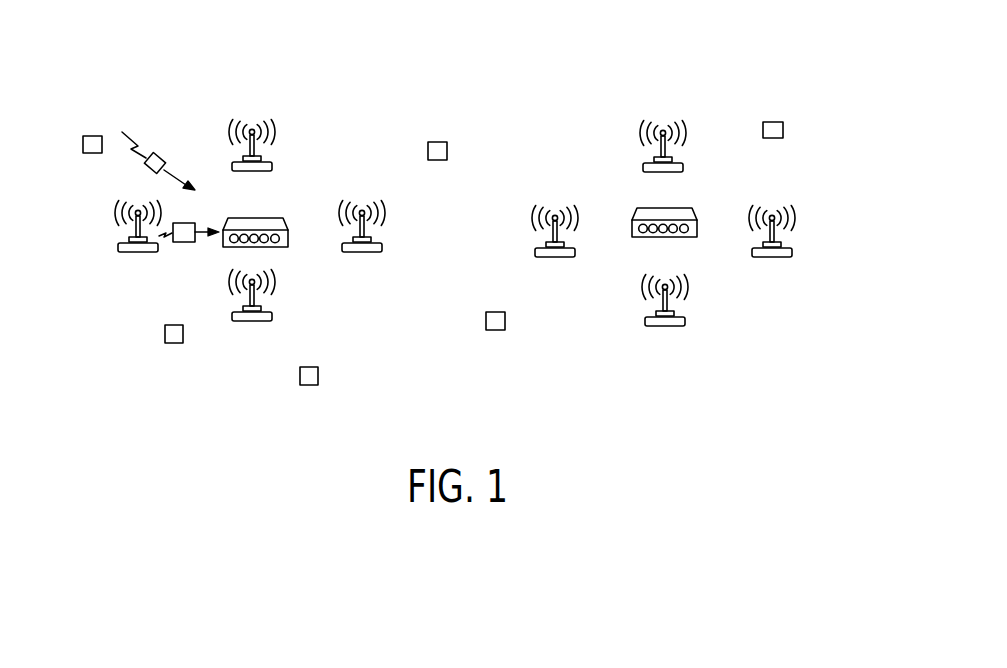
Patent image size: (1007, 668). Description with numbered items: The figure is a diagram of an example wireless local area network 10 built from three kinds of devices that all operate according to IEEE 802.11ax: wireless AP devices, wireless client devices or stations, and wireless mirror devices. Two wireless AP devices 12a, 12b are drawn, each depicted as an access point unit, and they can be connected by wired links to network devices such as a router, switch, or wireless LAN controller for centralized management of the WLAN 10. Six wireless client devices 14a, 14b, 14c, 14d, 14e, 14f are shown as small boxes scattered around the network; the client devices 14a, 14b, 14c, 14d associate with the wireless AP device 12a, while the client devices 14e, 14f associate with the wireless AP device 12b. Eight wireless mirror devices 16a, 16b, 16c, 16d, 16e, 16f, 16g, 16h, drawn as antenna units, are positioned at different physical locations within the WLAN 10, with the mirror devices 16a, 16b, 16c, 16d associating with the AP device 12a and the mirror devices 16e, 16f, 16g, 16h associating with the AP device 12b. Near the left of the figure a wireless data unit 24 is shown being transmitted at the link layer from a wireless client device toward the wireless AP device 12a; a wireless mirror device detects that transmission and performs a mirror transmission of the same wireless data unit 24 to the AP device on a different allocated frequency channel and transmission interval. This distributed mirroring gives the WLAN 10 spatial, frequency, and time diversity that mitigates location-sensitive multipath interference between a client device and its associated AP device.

The wireless local area network 10 is at (732, 82).
The wireless AP device 12a is at (258, 222).
The wireless AP device 12b is at (667, 213).
The wireless client device 14a is at (90, 136).
The wireless client device 14b is at (440, 161).
The wireless client device 14c is at (308, 386).
The wireless client device 14d is at (172, 344).
The wireless client device 14e is at (785, 128).
The wireless client device 14f is at (495, 331).
The wireless mirror device 16a is at (140, 252).
The wireless mirror device 16b is at (268, 163).
The wireless mirror device 16c is at (368, 252).
The wireless mirror device 16d is at (258, 320).
The wireless mirror device 16e is at (562, 256).
The wireless mirror device 16f is at (645, 166).
The wireless mirror device 16g is at (776, 254).
The wireless mirror device 16h is at (669, 324).
The wireless data unit 24 is at (160, 155).